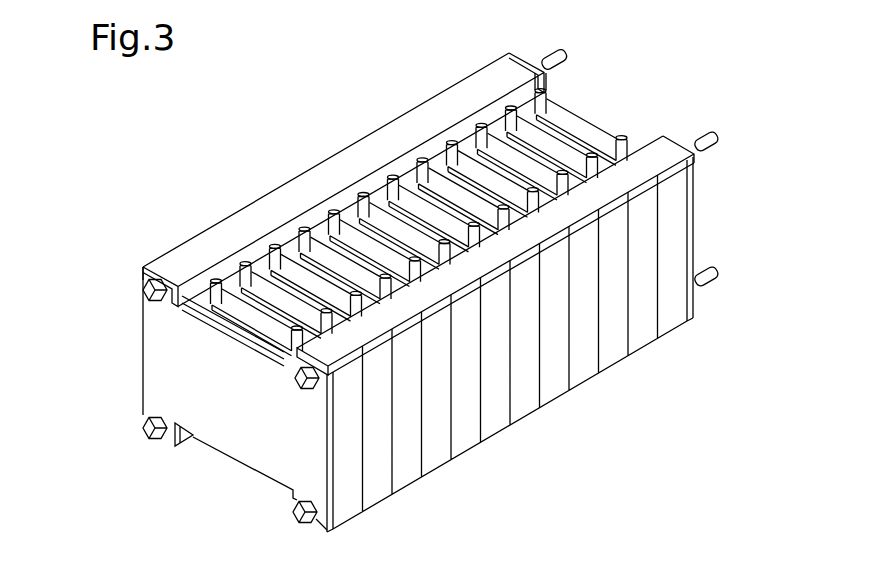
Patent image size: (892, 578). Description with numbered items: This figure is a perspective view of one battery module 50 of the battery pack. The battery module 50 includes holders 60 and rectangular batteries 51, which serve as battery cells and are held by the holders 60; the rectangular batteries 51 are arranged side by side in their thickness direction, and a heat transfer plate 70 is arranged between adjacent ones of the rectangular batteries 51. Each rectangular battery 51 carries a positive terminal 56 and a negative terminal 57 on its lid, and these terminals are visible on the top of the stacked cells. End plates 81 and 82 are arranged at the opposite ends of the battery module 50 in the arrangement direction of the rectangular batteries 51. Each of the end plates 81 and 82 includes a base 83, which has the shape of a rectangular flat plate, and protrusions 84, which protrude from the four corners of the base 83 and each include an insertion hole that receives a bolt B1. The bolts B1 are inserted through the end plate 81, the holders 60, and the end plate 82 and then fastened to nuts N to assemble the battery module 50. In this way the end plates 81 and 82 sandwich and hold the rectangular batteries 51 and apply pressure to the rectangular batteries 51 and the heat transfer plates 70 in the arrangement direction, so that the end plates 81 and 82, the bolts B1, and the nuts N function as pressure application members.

The battery module 50 is at (156, 130).
The rectangular battery 51 is at (247, 275).
The positive terminal 56 is at (333, 208).
The negative terminal 57 is at (622, 138).
The holder 60 is at (437, 467).
The heat transfer plate 70 is at (287, 245).
The end plate 81 is at (336, 530).
The end plate 82 is at (697, 322).
The base 83 is at (232, 437).
The protrusion 84 is at (151, 280).
The bolt B1 is at (158, 305).
The nut N is at (549, 63).